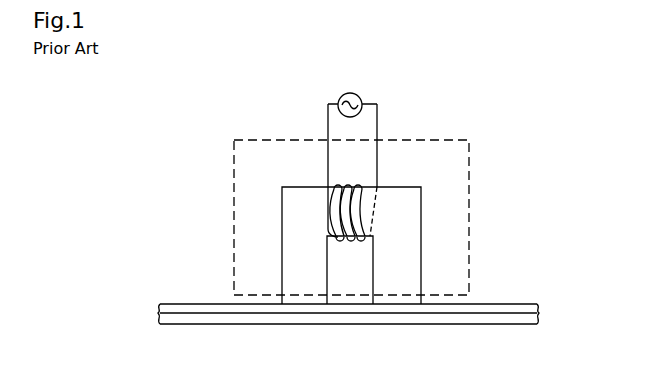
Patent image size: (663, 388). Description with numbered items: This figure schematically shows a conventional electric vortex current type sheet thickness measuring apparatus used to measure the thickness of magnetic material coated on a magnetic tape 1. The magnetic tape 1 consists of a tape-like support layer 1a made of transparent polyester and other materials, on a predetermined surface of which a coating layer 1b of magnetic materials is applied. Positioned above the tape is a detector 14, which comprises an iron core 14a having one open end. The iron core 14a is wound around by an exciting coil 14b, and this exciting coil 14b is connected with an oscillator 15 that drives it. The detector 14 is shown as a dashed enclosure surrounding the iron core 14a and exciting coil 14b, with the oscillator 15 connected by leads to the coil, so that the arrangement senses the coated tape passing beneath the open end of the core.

The magnetic tape 1 is at (549, 317).
The tape-like support layer 1a is at (505, 311).
The coating layer 1b is at (515, 321).
The detector 14 is at (470, 165).
The iron core 14a is at (413, 240).
The exciting coil 14b is at (351, 240).
The oscillator 15 is at (361, 97).